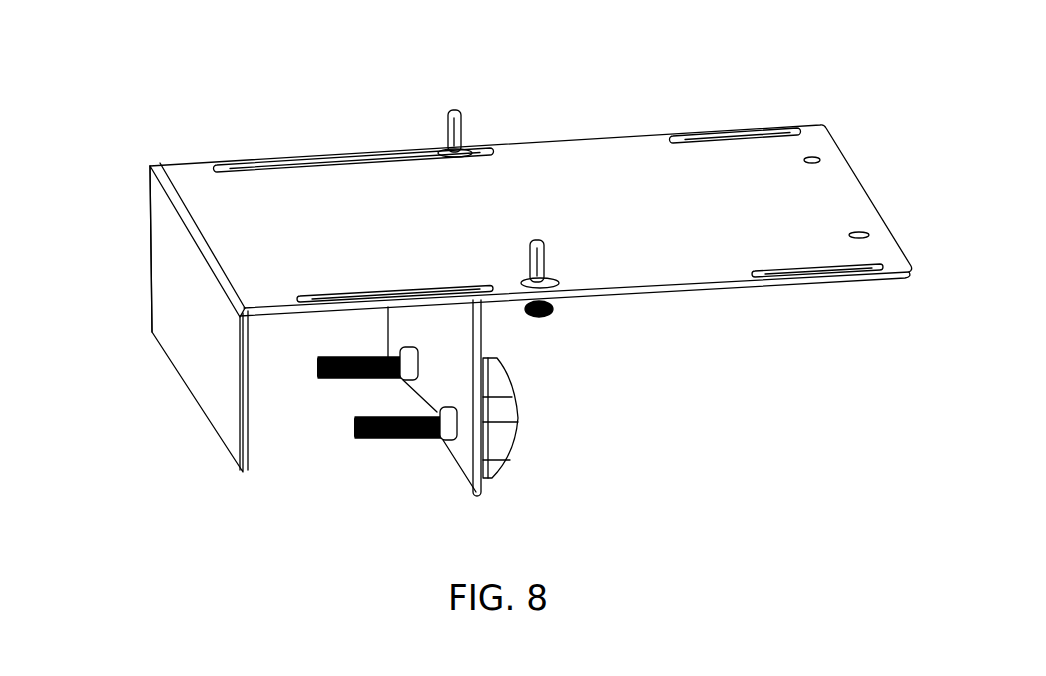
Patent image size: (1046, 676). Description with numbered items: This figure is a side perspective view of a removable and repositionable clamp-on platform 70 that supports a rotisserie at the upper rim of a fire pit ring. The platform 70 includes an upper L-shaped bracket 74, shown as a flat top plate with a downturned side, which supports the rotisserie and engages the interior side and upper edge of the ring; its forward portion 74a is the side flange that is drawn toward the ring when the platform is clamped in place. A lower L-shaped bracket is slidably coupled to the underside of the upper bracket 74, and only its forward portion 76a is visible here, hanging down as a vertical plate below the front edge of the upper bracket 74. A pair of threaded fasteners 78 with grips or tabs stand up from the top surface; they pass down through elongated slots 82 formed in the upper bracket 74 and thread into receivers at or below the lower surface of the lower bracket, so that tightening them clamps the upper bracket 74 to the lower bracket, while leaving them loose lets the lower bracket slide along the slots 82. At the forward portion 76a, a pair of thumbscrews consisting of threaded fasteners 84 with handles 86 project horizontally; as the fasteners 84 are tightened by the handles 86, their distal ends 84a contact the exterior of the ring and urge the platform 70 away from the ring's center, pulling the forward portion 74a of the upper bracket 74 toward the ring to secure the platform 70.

The clamp-on platform 70 is at (800, 87).
The upper L-shaped bracket 74 is at (625, 170).
The forward portion of the upper L-shaped bracket 74a is at (170, 318).
The forward portion of the lower bracket 76a is at (452, 342).
The threaded fasteners 78 is at (450, 127).
The slots 82 is at (300, 157).
The threaded fasteners 84 is at (347, 372).
The distal ends 84a is at (318, 373).
The handles 86 is at (498, 438).